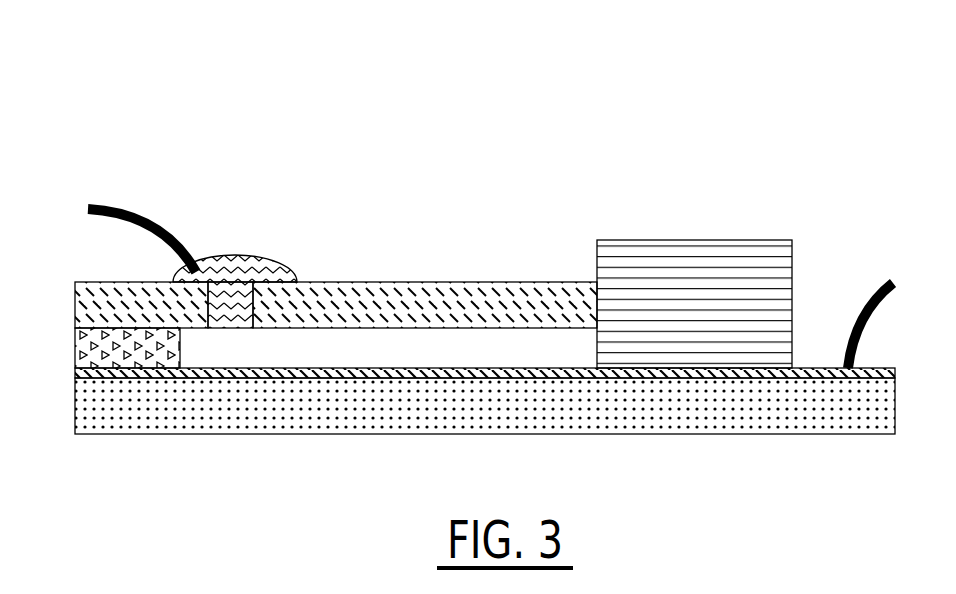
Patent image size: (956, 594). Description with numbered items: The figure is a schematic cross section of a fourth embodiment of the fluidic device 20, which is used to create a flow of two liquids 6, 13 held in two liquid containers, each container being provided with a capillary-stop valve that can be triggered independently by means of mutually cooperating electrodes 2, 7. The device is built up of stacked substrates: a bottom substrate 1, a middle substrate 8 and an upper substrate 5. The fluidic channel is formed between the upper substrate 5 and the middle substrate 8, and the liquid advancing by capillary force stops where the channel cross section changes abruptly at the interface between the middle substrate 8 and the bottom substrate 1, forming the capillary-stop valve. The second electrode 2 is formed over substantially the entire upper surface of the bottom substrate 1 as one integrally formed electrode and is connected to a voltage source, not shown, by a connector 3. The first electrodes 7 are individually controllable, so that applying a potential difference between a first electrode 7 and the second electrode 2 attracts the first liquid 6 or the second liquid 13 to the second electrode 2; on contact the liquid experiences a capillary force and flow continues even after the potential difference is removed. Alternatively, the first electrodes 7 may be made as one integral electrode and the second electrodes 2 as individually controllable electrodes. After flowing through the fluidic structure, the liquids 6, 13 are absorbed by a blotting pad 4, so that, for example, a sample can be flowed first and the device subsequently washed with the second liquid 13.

The bottom substrate 1 is at (155, 415).
The second electrode 2 is at (885, 368).
The connector 3 is at (872, 300).
The blotting pad 4 is at (700, 257).
The upper substrate 5 is at (403, 290).
The first liquid 6 is at (246, 223).
The second liquid 13 is at (238, 270).
The first electrode 7 is at (137, 207).
The middle substrate 8 is at (84, 352).
The fluidic device 20 is at (600, 110).